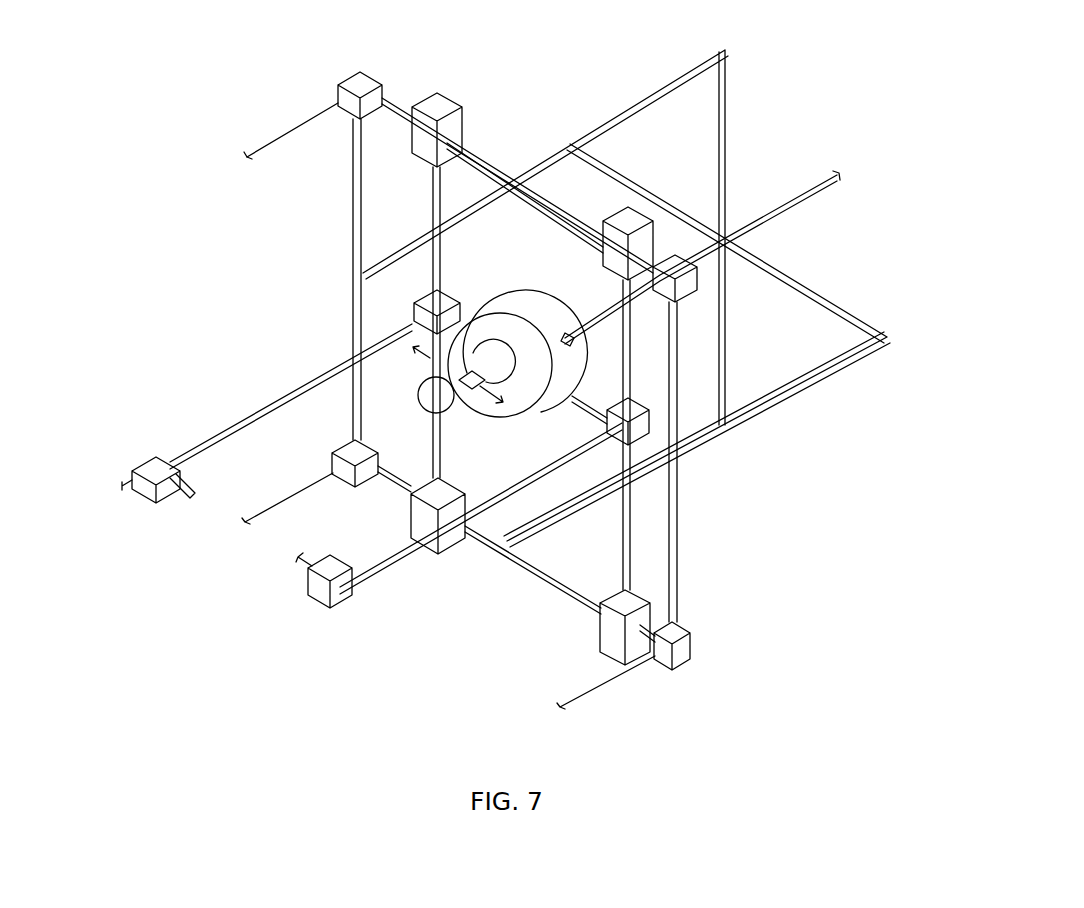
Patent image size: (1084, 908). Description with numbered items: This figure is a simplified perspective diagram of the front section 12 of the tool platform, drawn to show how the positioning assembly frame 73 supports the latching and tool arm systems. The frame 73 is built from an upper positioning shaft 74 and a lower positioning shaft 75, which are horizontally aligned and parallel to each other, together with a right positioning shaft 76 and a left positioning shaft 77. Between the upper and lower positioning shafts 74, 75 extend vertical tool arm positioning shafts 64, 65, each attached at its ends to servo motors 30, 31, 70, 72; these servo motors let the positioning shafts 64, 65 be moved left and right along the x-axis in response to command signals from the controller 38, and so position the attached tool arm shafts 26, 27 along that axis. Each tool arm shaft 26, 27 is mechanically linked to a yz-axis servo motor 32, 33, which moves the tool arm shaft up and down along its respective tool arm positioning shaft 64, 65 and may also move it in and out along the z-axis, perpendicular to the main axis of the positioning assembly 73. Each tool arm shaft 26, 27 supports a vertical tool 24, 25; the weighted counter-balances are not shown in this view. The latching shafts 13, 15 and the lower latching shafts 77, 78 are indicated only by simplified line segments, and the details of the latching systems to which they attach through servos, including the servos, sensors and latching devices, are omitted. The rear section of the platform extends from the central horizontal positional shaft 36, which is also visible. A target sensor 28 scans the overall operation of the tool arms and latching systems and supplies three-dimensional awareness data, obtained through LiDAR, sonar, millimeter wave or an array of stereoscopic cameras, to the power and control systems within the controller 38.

The front section 12 is at (222, 58).
The latching shaft 13 is at (273, 142).
The servo motor 30 is at (430, 113).
The upper positioning shaft 74 is at (497, 170).
The positioning assembly frame 73 is at (548, 203).
The servo motor 31 is at (632, 232).
The central horizontal positional shaft 36 is at (822, 177).
The right positioning shaft 76 is at (362, 232).
The tool arm positioning shaft 64 is at (440, 247).
The yz-axis servo motor 32 is at (417, 297).
The tool arm shaft 26 is at (253, 410).
The tool arm positioning shaft 65 is at (630, 330).
The latching shaft 15 is at (572, 346).
The controller 38 is at (537, 378).
The target sensor 28 is at (457, 393).
The yz-axis servo motor 33 is at (635, 430).
The vertical tool 24 is at (147, 485).
The servo motor 70 is at (415, 527).
The lower latching shaft 77 is at (672, 527).
The vertical tool 25 is at (302, 578).
The tool arm shaft 27 is at (382, 558).
The lower positioning shaft 75 is at (483, 530).
The servo motor 72 is at (603, 627).
The lower latching shaft 78 is at (577, 697).